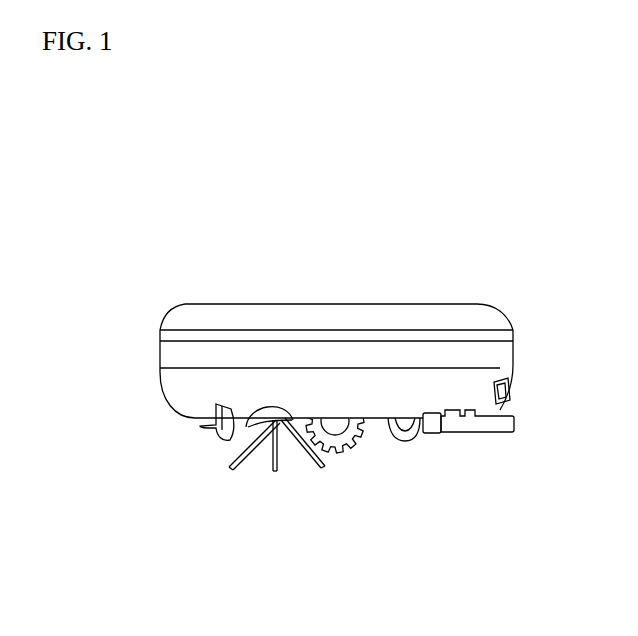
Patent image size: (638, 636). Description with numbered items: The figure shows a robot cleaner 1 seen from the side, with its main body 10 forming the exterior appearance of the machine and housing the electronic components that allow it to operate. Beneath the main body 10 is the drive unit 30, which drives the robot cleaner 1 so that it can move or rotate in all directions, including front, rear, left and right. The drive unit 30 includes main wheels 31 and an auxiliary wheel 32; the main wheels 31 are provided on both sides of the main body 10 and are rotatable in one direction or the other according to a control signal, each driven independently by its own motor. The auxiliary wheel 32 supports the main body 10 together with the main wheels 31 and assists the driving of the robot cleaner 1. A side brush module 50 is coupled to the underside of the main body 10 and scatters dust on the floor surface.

The robot cleaner 1 is at (379, 292).
The main body 10 is at (487, 372).
The drive unit 30 is at (301, 500).
The main wheels 31 is at (350, 446).
The auxiliary wheel 32 is at (218, 435).
The side brush module 50 is at (282, 458).